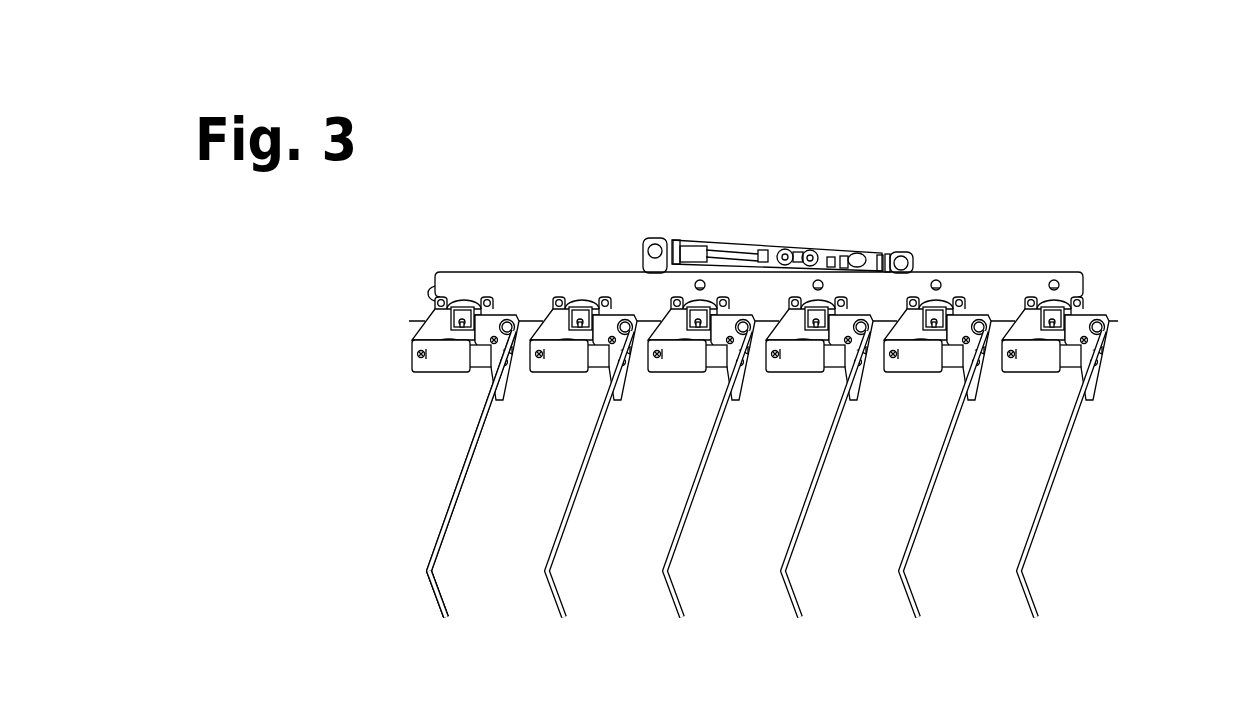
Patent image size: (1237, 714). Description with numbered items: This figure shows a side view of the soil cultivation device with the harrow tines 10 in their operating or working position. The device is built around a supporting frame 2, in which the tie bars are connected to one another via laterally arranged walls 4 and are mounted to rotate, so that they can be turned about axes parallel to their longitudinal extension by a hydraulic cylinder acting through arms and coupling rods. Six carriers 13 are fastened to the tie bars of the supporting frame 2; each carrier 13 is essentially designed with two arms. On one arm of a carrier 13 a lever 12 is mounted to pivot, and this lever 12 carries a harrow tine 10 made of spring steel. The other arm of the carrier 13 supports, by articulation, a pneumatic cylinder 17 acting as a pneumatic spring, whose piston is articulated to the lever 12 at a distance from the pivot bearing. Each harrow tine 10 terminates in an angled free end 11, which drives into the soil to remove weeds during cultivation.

The supporting frame 2 is at (769, 332).
The walls 4 is at (522, 272).
The harrow tines 10 is at (421, 495).
The angled free ends 11 is at (440, 596).
The levers 12 is at (1085, 323).
The carriers 13 is at (1091, 378).
The pneumatic cylinder 17 is at (1038, 370).